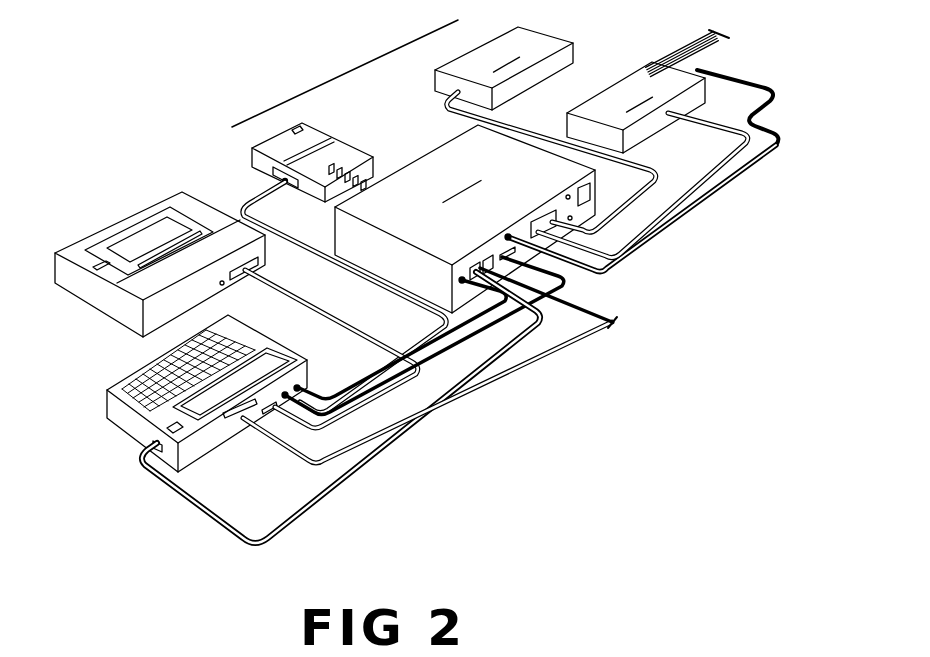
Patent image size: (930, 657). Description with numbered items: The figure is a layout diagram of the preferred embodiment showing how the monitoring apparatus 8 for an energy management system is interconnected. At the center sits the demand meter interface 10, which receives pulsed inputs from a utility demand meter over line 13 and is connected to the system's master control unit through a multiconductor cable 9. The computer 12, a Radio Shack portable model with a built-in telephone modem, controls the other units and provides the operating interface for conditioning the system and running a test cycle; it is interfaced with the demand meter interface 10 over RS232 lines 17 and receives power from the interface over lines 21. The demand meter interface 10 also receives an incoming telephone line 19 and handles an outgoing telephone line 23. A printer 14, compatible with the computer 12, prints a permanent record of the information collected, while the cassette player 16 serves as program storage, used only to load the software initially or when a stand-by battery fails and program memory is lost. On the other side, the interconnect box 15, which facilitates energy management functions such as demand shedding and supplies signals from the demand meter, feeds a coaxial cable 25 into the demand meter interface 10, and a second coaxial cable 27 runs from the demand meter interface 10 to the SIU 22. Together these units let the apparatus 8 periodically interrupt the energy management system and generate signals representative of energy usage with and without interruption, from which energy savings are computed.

The monitoring apparatus 8 is at (349, 73).
The multiconductor cable 9 is at (688, 54).
The demand meter interface 10 is at (436, 156).
The computer 12 is at (130, 427).
The line 13 is at (711, 64).
The printer 14 is at (178, 196).
The interconnect box 15 is at (630, 78).
The cassette player 16 is at (340, 148).
The RS232 lines 17 is at (566, 291).
The incoming telephone line 19 is at (593, 309).
The lines 21 is at (484, 358).
The SIU 22 is at (540, 40).
The outgoing telephone line 23 is at (441, 333).
The coaxial cable 25 is at (720, 127).
The coaxial cable 27 is at (658, 175).